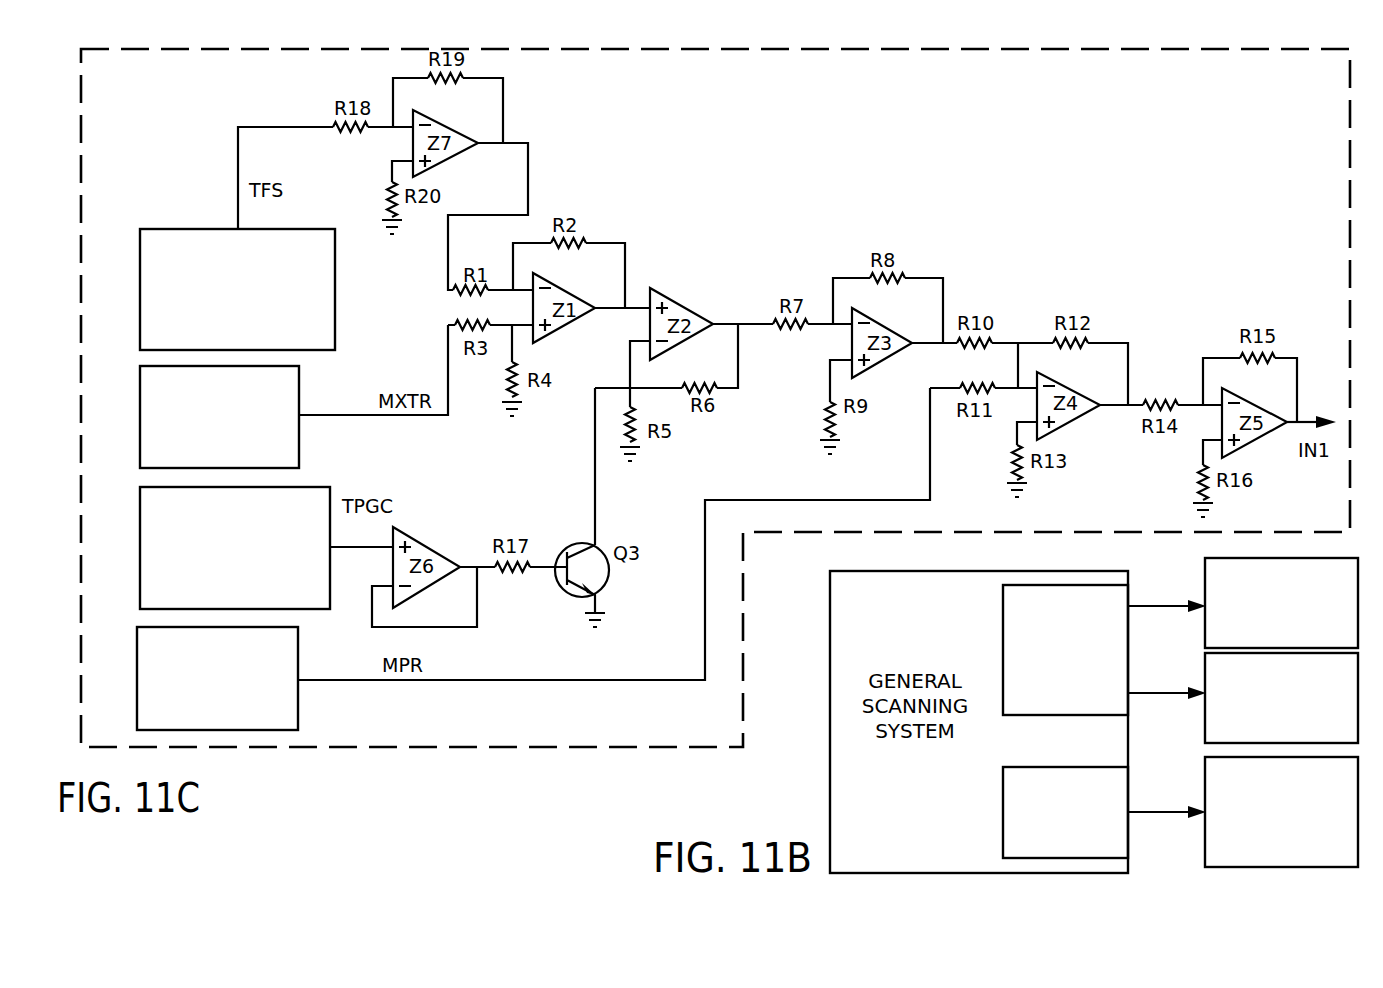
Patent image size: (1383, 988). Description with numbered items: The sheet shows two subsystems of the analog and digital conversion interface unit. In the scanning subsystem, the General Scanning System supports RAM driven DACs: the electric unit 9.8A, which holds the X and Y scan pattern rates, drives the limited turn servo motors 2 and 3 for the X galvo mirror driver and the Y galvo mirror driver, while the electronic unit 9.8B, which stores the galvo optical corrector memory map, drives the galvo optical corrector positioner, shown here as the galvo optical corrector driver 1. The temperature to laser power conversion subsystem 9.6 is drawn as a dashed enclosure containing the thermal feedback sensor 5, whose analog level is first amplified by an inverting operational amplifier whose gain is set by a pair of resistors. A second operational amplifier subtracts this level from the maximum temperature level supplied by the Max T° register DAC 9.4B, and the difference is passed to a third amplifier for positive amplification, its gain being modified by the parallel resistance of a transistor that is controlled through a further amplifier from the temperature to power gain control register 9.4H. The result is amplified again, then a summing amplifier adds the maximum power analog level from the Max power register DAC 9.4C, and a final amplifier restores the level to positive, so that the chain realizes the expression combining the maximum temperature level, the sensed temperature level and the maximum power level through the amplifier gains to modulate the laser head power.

In FIG. 11C, the thermal feedback sensor 5 is at (167, 229).
In FIG. 11C, the Max T° register DAC 9.4B is at (140, 425).
In FIG. 11C, the temperature to power gain control signal DAC 9.4H is at (312, 487).
In FIG. 11C, the Max power register DAC 9.4C is at (137, 672).
In FIG. 11C, the temperature to laser power conversion subsystem 9.6 is at (446, 754).
In FIG. 11B, the X and Y scan electric unit 9.8A is at (1003, 638).
In FIG. 11B, the galvo optical corrector electronic unit 9.8B is at (1003, 830).
In FIG. 11B, the limited turn servo motor 2 is at (1205, 588).
In FIG. 11B, the limited turn servo motor 3 is at (1205, 675).
In FIG. 11B, the galvo optical corrector driver 1 is at (1205, 778).